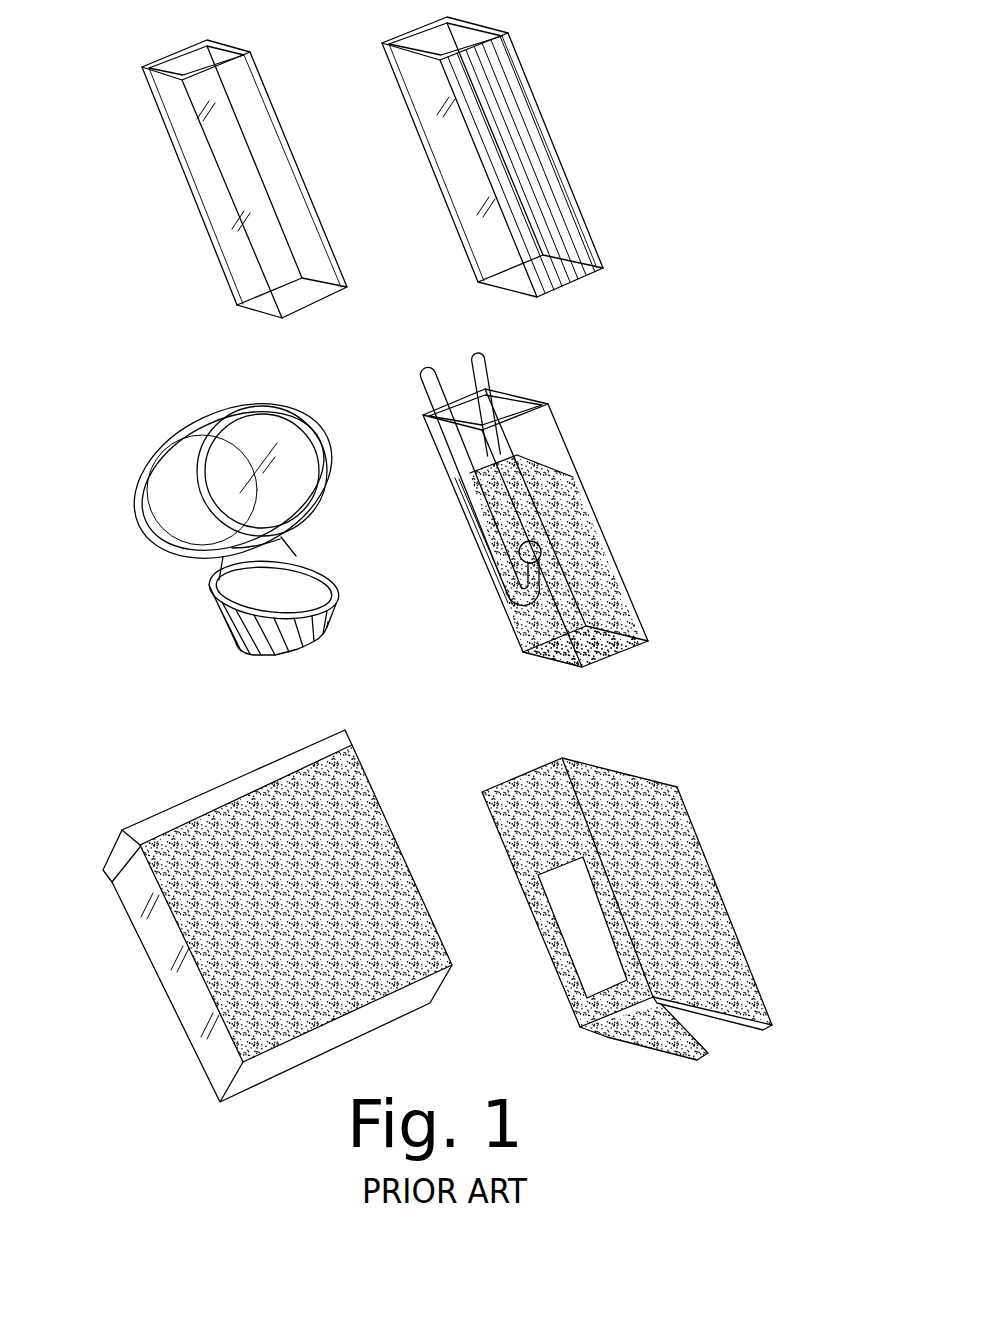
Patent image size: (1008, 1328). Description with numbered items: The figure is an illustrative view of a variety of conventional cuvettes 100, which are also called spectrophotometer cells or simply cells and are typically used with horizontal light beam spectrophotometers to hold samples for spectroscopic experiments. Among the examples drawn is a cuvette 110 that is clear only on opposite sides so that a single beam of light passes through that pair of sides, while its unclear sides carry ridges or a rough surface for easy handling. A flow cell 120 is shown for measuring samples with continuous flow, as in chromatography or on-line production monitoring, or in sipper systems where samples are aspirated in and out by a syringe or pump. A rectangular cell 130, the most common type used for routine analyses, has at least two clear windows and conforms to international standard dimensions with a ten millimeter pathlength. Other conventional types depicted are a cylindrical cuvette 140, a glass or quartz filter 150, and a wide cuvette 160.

The conventional cuvettes 100 is at (783, 318).
The cuvette clear only on opposite sides 110 is at (570, 148).
The flow cell 120 is at (617, 513).
The rectangular cell 130 is at (188, 268).
The cylindrical cuvette 140 is at (177, 567).
The glass or quartz filter 150 is at (747, 893).
The wide cuvette 160 is at (112, 948).